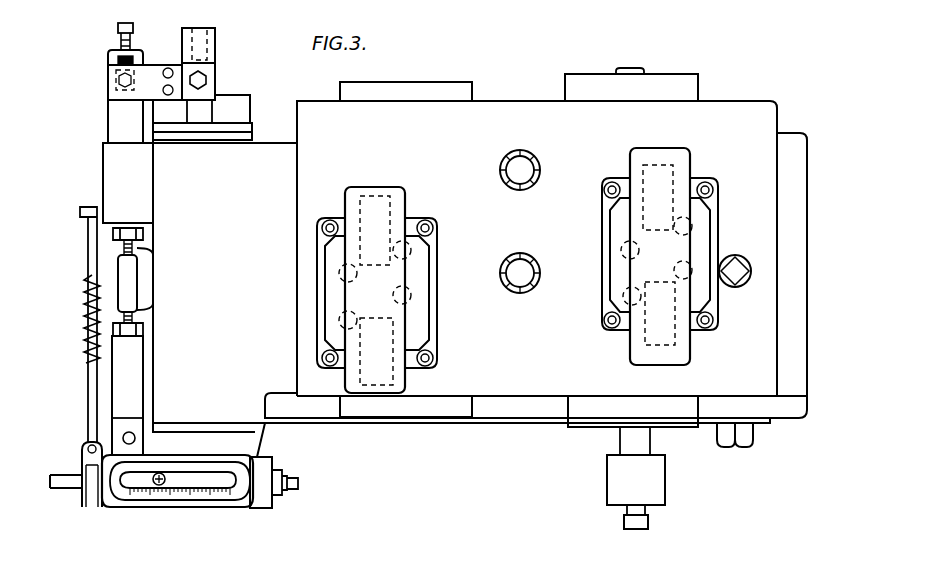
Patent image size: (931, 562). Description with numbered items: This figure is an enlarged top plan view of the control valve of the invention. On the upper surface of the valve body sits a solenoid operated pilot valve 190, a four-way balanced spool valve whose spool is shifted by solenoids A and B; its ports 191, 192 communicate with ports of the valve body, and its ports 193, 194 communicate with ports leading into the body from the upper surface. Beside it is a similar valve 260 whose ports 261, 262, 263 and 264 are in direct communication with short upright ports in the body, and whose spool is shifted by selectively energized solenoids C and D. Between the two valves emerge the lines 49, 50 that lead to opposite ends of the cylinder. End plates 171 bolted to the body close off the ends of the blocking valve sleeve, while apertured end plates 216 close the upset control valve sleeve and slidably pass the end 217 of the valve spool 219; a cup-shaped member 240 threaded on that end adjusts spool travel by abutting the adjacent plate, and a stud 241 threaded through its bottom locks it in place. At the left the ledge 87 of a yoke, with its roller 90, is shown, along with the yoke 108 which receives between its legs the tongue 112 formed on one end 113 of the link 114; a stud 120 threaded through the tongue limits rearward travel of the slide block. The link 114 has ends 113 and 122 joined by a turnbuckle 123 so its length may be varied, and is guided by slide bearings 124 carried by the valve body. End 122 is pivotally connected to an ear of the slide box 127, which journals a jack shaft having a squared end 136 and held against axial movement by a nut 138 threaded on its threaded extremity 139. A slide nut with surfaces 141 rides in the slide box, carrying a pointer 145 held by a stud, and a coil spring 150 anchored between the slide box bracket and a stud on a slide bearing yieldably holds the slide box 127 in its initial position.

The line 49 is at (520, 150).
The line 50 is at (522, 253).
The ledge 87 is at (212, 66).
The roller 90 is at (200, 31).
The yoke 108 is at (108, 92).
The tongue 112 is at (108, 59).
The end of link 113 is at (108, 126).
The link 114 is at (108, 390).
The stud 120 is at (118, 28).
The end of link 122 is at (143, 373).
The turnbuckle 123 is at (118, 272).
The slide bearings 124 is at (115, 172).
The slide box 127 is at (250, 507).
The squared end 136 is at (68, 490).
The nut 138 is at (278, 490).
The threaded extremity 139 is at (298, 482).
The surfaces of slide nut 141 is at (92, 446).
The pointer 145 is at (155, 488).
The coil spring 150 is at (80, 360).
The end plates 171 is at (438, 88).
The solenoid operated pilot valve 190 is at (392, 184).
The port 191 is at (410, 250).
The port 192 is at (410, 295).
The port 193 is at (340, 270).
The port 194 is at (342, 326).
The end plates 216 is at (688, 80).
The end of valve spool 217 is at (620, 443).
The valve spool 219 is at (630, 67).
The cup-shaped member 240 is at (607, 488).
The stud 241 is at (624, 524).
The valve 260 is at (680, 152).
The port 261 is at (622, 250).
The port 262 is at (624, 297).
The port 263 is at (700, 228).
The port 264 is at (712, 280).
The solenoid A is at (390, 343).
The solenoid B is at (396, 206).
The solenoid C is at (668, 185).
The solenoid D is at (682, 346).